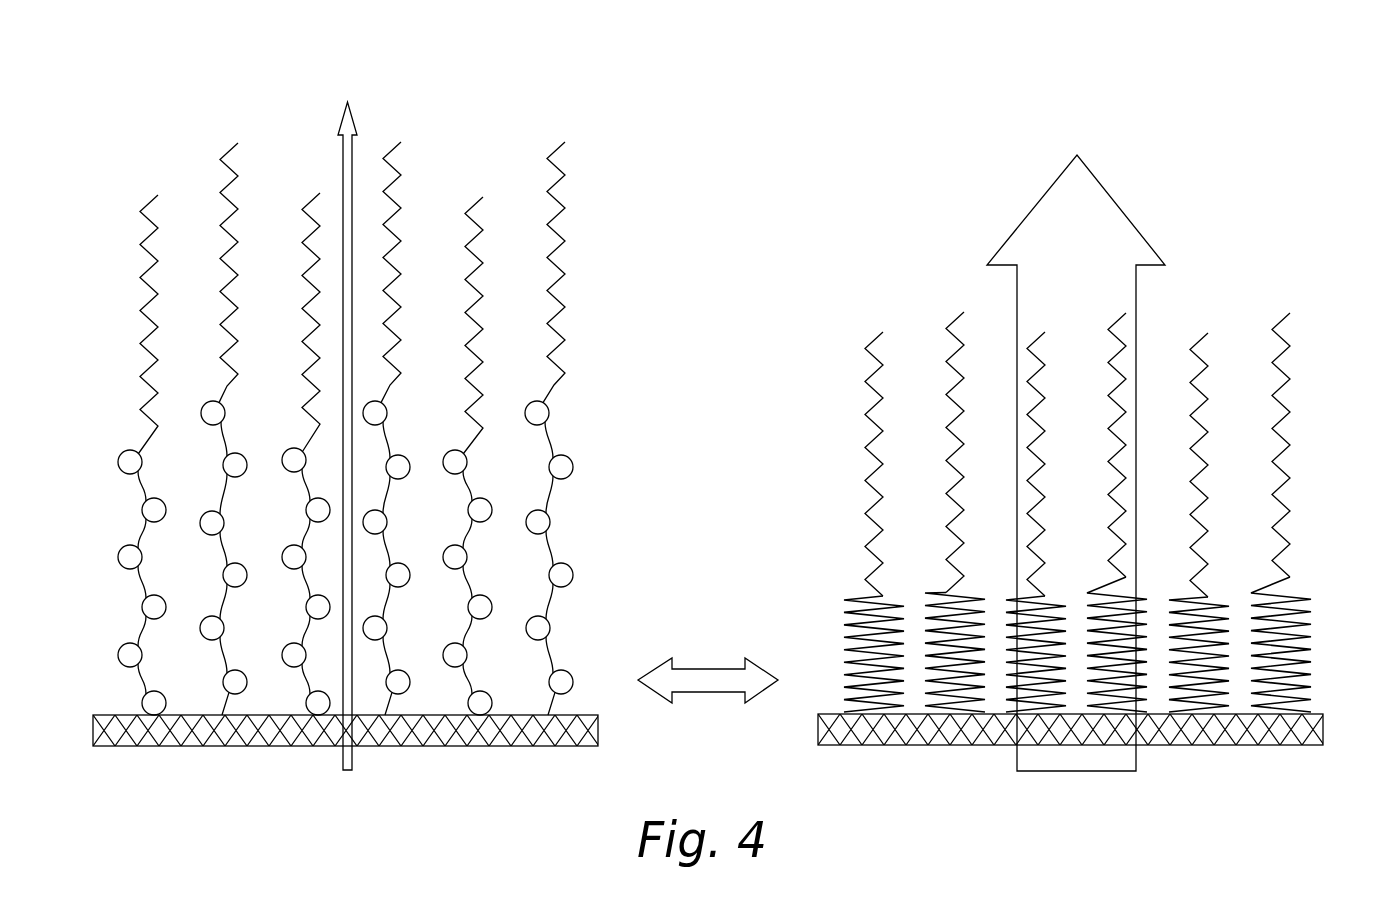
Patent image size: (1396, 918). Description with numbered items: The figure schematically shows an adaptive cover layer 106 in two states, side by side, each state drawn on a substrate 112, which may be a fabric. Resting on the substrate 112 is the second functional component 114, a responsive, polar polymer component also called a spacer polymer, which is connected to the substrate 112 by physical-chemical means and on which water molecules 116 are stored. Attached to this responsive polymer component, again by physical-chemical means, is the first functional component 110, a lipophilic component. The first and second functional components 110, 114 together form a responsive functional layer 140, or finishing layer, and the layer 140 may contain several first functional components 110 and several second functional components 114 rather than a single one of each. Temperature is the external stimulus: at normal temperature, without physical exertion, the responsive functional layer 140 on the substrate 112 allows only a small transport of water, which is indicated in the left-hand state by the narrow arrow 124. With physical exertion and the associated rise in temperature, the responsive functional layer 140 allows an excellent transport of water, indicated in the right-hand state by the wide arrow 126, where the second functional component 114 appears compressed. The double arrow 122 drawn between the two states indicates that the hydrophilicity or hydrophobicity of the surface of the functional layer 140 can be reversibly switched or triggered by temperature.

The cover layer 106 is at (105, 108).
The first functional component 110 is at (143, 305).
The substrate 112 is at (255, 747).
The second functional component 114 is at (140, 633).
The water molecules 116 is at (128, 557).
The double arrow 122 is at (706, 668).
The narrow arrow 124 is at (343, 173).
The wide arrow 126 is at (1055, 226).
The responsive functional layer 140 is at (503, 140).